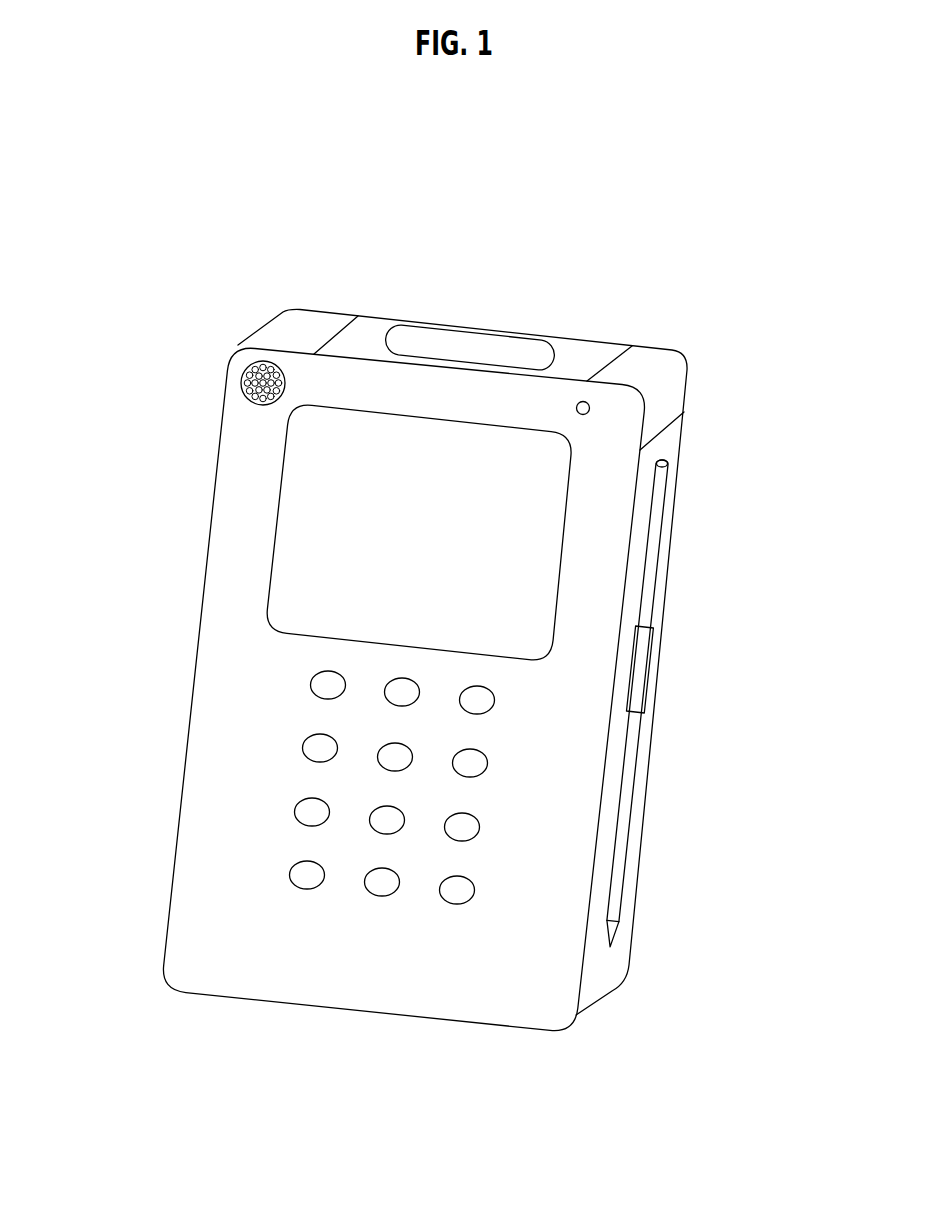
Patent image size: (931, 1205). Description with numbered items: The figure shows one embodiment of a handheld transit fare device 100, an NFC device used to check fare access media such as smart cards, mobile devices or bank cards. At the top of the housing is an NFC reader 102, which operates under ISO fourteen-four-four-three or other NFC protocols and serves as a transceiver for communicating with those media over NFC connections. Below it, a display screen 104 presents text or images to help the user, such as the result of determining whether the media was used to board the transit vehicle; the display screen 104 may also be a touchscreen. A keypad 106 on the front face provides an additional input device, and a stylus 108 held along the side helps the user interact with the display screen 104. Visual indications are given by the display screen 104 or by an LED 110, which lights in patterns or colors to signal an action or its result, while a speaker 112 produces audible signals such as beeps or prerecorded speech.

The handheld transit fare device 100 is at (212, 508).
The NFC reader 102 is at (472, 340).
The display screen 104 is at (353, 442).
The keypad 106 is at (320, 680).
The stylus 108 is at (648, 600).
The light emitting diode (LED) 110 is at (588, 404).
The speaker 112 is at (248, 375).